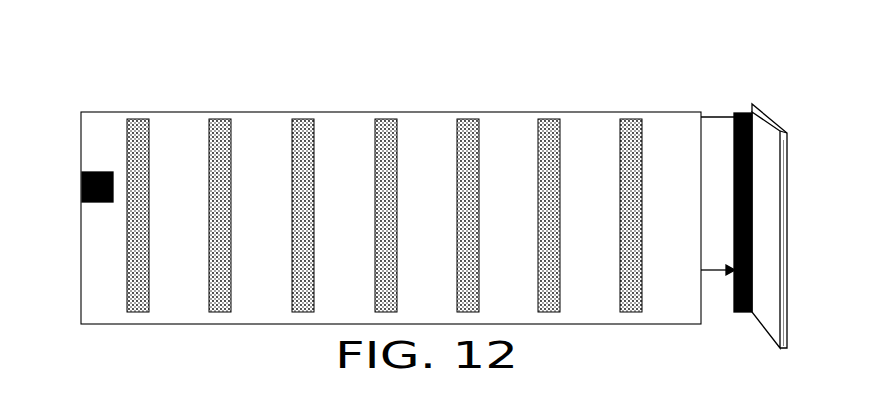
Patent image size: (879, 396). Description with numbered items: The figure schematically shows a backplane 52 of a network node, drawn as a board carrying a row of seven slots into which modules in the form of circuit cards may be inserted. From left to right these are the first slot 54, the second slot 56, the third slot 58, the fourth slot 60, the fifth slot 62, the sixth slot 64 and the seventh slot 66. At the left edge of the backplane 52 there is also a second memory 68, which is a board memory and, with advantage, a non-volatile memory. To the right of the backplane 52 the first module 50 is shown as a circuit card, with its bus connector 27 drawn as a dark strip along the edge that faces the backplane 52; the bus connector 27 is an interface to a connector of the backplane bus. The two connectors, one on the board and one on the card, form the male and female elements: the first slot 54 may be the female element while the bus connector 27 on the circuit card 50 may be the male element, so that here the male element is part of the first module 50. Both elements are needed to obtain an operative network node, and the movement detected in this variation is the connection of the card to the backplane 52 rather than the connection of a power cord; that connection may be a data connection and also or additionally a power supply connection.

The second memory 68 is at (80, 172).
The first slot SL1 54 is at (130, 177).
The second slot SL2 56 is at (217, 177).
The third slot SL3 58 is at (309, 177).
The fourth slot SL4 60 is at (395, 177).
The fifth slot SL5 62 is at (465, 177).
The sixth slot SL6 64 is at (545, 177).
The seventh slot SL7 66 is at (631, 177).
The backplane 52 is at (676, 111).
The bus connector 27 is at (734, 208).
The first module 50 is at (757, 128).